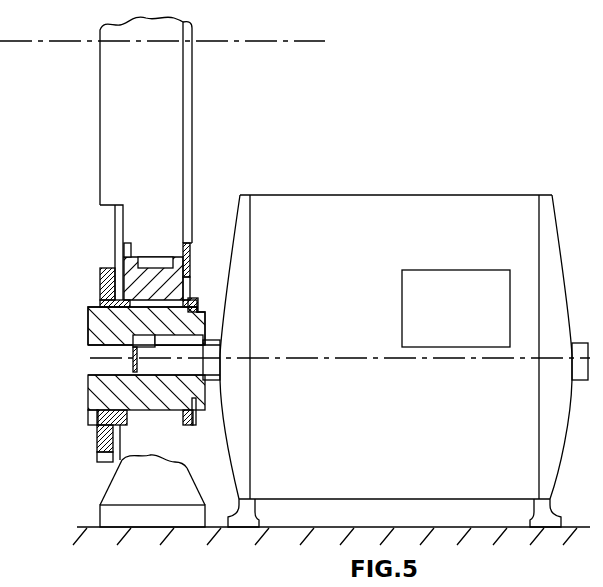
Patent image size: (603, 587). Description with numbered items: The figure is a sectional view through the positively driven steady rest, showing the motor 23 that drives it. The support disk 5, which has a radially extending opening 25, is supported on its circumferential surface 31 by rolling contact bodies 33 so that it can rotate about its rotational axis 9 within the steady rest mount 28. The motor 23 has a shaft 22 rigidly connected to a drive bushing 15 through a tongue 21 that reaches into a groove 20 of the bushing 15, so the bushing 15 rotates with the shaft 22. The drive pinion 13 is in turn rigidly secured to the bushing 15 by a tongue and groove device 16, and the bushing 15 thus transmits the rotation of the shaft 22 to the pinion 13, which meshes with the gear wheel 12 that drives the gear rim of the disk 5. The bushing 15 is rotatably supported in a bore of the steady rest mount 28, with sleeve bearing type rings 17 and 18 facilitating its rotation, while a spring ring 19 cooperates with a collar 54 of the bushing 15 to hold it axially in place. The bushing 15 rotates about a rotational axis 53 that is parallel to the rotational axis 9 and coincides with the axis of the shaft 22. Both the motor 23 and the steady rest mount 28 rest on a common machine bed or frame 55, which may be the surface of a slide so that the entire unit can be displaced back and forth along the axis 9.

The support disk 5 is at (90, 157).
The rotational axis 9 is at (226, 41).
The gear wheel 12 is at (102, 236).
The drive pinion 13 is at (100, 278).
The drive bushing 15 is at (95, 388).
The tongue and groove device 16 is at (108, 318).
The sleeve bearing type ring 17 is at (97, 443).
The sleeve bearing type ring 18 is at (192, 299).
The spring ring 19 is at (196, 425).
The groove 20 is at (206, 343).
The tongue 21 is at (200, 342).
The shaft 22 is at (150, 365).
The motor 23 is at (343, 208).
The radially extending opening 25 is at (113, 105).
The steady rest mount 28 is at (184, 104).
The circumferential surface 31 is at (163, 259).
The rolling contact bodies 33 is at (186, 241).
The rotational axis 53 is at (340, 360).
The collar 54 is at (92, 310).
The machine bed or frame 55 is at (245, 530).